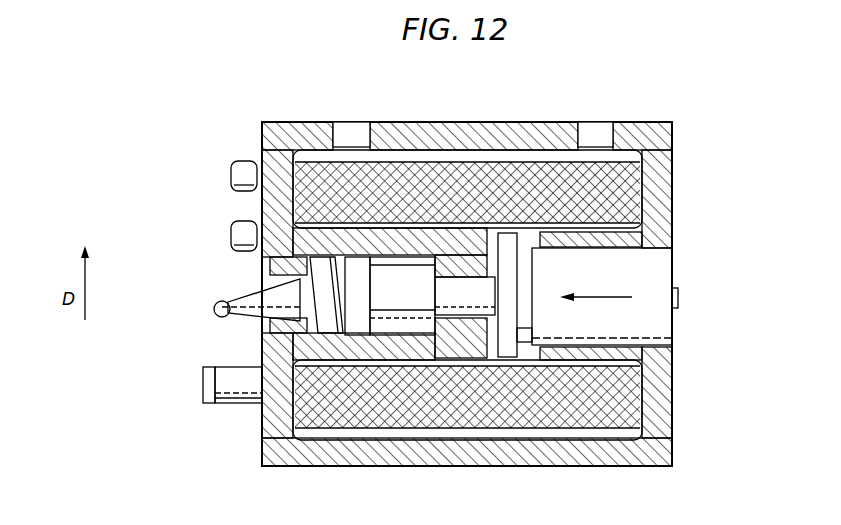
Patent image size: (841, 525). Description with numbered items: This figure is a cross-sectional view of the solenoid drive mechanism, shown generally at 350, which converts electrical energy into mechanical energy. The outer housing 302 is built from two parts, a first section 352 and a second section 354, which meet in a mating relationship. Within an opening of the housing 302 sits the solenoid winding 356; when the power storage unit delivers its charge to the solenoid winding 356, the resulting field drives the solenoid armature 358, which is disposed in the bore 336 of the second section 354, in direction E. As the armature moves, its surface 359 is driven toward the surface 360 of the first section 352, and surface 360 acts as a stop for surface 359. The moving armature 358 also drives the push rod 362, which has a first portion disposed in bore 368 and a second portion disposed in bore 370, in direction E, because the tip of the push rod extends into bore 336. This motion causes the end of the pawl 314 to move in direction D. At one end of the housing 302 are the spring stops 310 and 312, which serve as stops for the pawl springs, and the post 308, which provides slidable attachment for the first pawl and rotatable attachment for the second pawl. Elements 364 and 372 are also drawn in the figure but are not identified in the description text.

The cross-sectional view of the mechanism 350 is at (601, 82).
The outer housing 302 is at (462, 122).
The first section 352 is at (317, 122).
The second section 354 is at (670, 149).
The solenoid winding 356 is at (640, 197).
The surface of solenoid armature 359 is at (520, 375).
The solenoid armature 358 is at (650, 270).
The bore 336 is at (635, 350).
The surface of first section 360 is at (503, 345).
The push rod 362 is at (457, 310).
The bore 368 is at (443, 300).
The rotor discs 364 is at (332, 355).
The bore 370 is at (335, 240).
The tapered shaft tip 372 is at (262, 323).
The pawl 314 is at (214, 307).
The spring stop 310 is at (230, 173).
The spring stop 312 is at (230, 237).
The post 308 is at (230, 403).